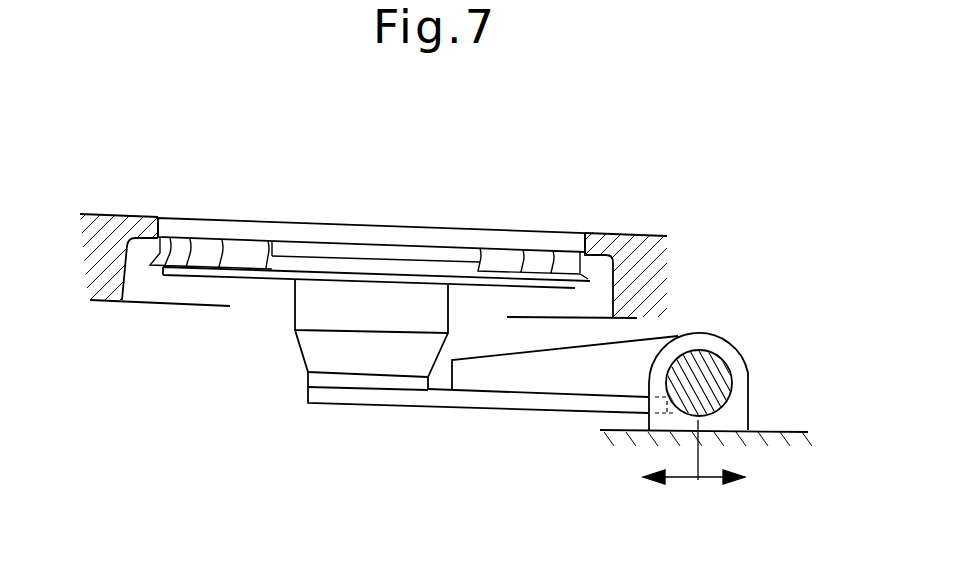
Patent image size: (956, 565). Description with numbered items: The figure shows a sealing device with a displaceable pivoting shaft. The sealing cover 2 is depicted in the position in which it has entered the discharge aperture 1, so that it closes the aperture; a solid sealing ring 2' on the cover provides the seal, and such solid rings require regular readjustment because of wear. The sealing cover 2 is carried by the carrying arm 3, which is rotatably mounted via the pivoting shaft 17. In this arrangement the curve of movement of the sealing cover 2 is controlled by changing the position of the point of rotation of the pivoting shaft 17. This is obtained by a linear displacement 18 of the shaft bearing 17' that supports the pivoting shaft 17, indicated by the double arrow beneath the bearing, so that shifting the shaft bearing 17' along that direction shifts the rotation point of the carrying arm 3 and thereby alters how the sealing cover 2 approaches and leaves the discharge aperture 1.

The discharge aperture 1 is at (204, 226).
The sealing cover 2 is at (249, 196).
The solid sealing ring 2' is at (533, 202).
The carrying arm 3 is at (463, 403).
The pivoting shaft 17 is at (735, 308).
The shaft bearing 17' is at (660, 373).
The linear displacement 18 is at (694, 475).